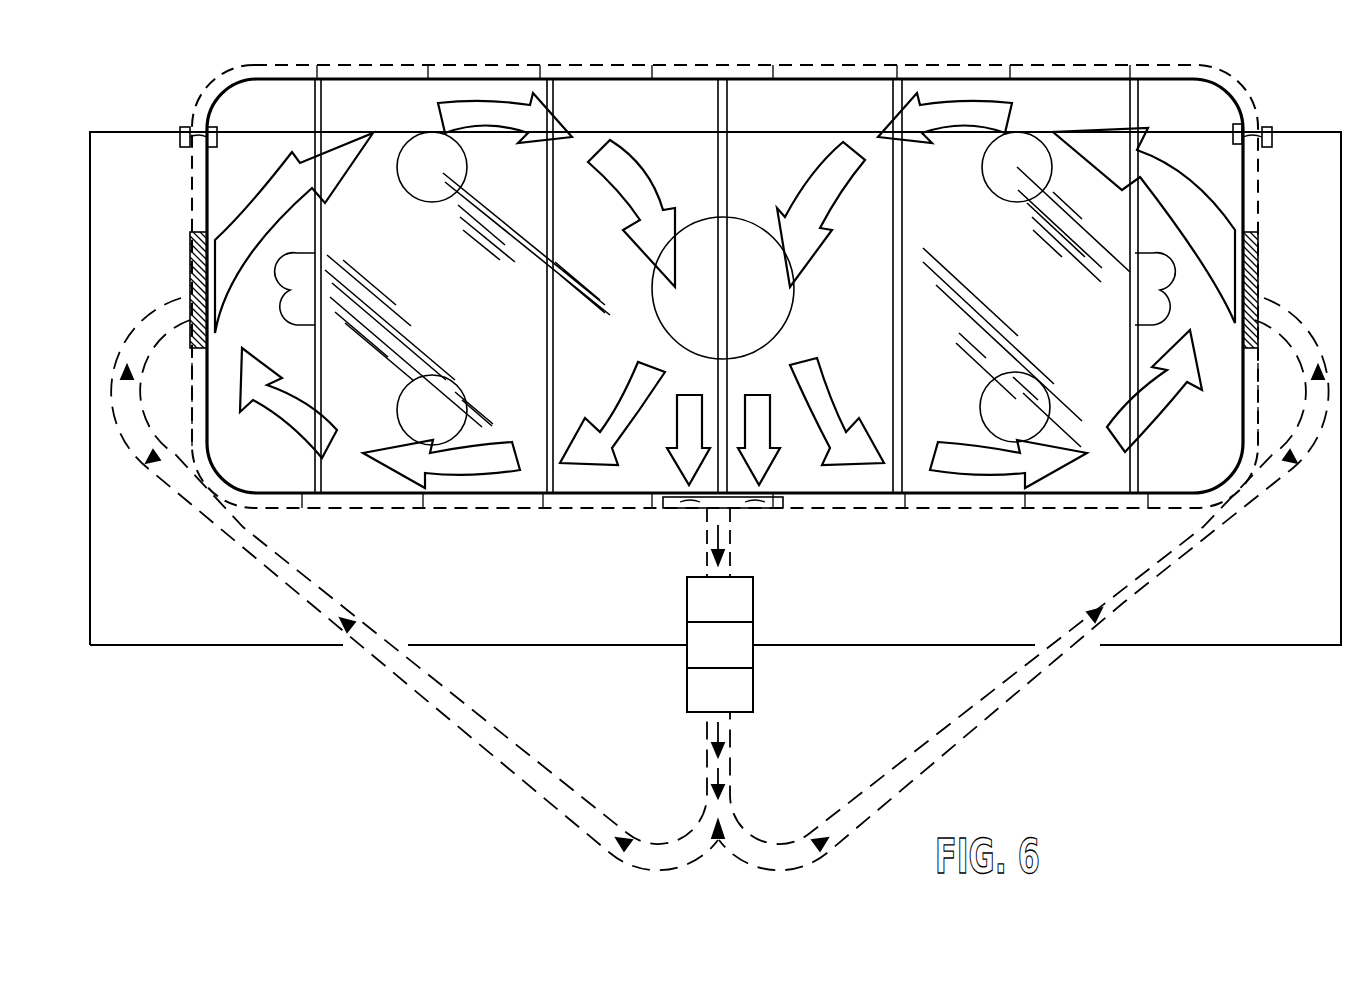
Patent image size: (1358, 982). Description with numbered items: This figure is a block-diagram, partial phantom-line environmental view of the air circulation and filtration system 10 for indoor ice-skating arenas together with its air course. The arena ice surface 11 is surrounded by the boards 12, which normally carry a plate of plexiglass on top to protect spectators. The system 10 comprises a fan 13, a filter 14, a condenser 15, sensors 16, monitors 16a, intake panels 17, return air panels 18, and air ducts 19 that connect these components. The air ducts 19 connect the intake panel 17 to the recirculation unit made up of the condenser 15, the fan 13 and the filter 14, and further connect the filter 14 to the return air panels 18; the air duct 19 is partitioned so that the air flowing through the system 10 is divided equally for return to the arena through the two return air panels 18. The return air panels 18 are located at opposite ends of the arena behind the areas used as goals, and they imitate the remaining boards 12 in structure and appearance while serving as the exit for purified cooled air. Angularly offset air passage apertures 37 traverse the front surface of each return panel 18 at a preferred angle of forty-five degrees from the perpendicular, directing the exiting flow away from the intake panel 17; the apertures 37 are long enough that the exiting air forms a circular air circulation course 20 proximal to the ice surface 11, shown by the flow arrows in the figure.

The air circulation and filtration system 10 is at (1180, 731).
The ice surface 11 is at (690, 161).
The boards 12 is at (491, 66).
The fan 13 is at (753, 641).
The filter 14 is at (753, 690).
The condenser 15 is at (753, 603).
The sensors 16 is at (218, 138).
The monitors 16a is at (185, 128).
The intake panels 17 is at (605, 510).
The return air panels 18 is at (190, 247).
The air ducts 19 is at (262, 577).
The air circulation course 20 is at (250, 216).
The angularly offset air passage apertures 37 is at (190, 268).